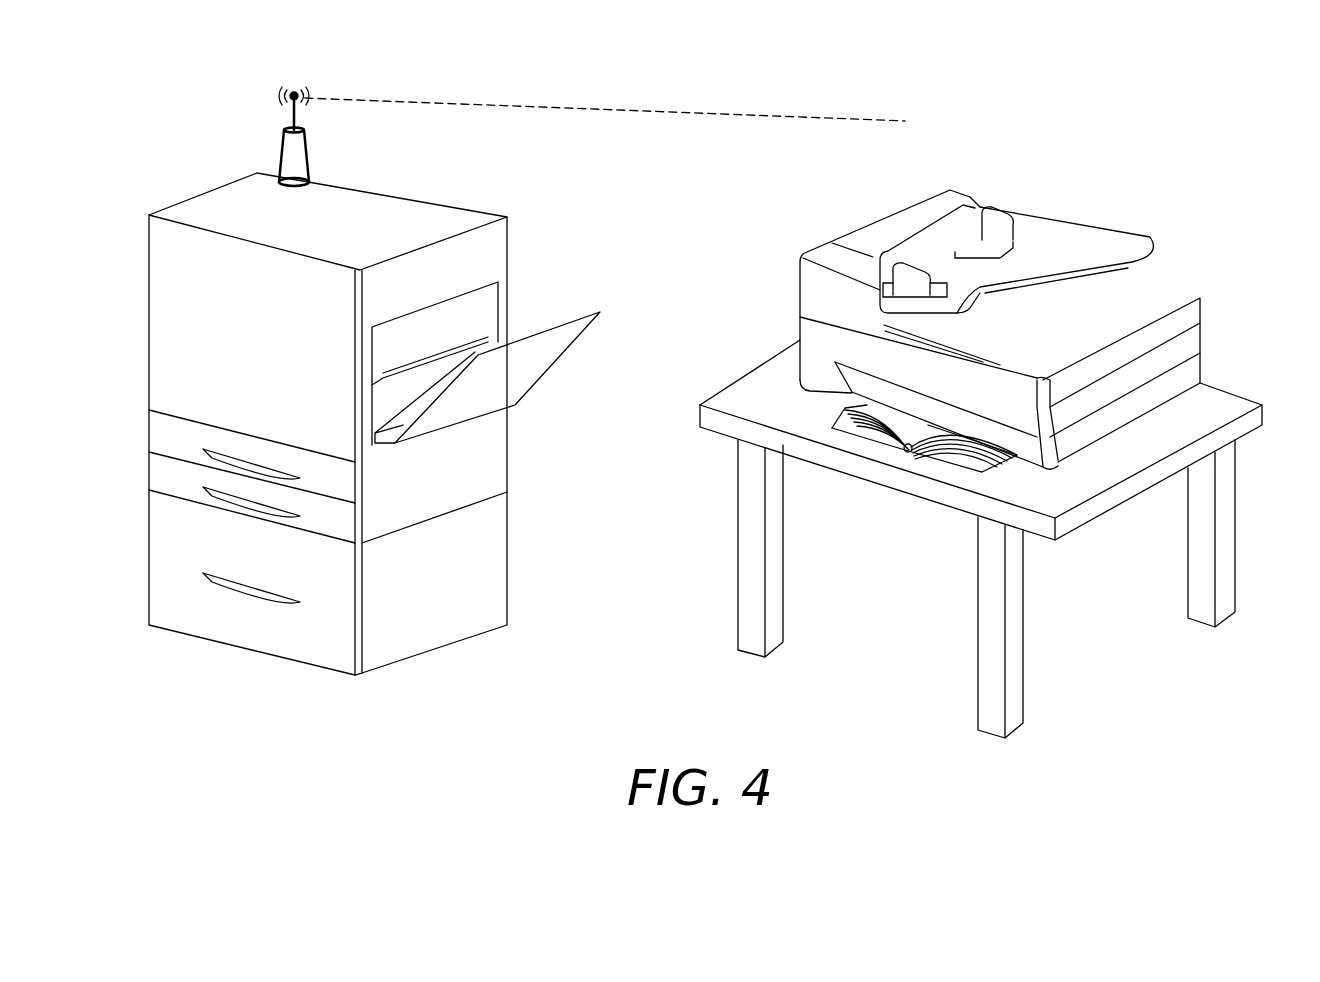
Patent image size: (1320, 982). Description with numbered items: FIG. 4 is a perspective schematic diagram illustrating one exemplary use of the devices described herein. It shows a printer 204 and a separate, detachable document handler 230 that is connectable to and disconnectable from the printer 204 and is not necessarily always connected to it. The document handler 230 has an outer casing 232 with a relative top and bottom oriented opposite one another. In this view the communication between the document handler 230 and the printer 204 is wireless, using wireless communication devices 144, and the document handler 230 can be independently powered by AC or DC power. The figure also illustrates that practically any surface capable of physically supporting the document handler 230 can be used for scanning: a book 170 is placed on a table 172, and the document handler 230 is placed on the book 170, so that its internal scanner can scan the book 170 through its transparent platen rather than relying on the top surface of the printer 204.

The wireless communication devices 144 is at (277, 157).
The printer 204 is at (212, 189).
The document handler 230 is at (807, 233).
The outer casing 232 is at (798, 290).
The book 170 is at (757, 377).
The table 172 is at (737, 523).